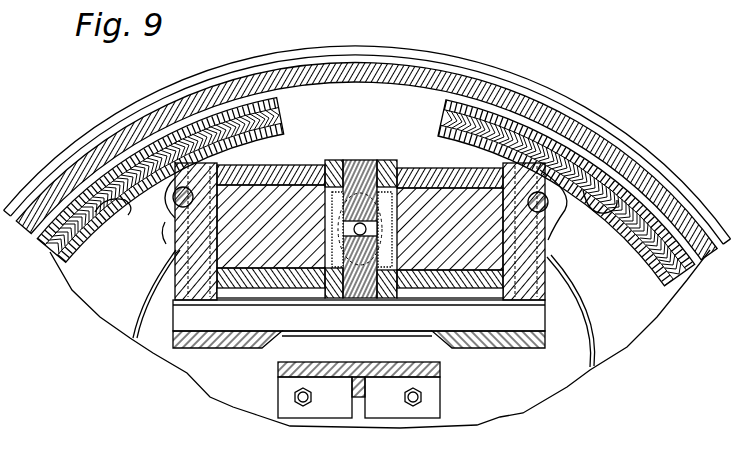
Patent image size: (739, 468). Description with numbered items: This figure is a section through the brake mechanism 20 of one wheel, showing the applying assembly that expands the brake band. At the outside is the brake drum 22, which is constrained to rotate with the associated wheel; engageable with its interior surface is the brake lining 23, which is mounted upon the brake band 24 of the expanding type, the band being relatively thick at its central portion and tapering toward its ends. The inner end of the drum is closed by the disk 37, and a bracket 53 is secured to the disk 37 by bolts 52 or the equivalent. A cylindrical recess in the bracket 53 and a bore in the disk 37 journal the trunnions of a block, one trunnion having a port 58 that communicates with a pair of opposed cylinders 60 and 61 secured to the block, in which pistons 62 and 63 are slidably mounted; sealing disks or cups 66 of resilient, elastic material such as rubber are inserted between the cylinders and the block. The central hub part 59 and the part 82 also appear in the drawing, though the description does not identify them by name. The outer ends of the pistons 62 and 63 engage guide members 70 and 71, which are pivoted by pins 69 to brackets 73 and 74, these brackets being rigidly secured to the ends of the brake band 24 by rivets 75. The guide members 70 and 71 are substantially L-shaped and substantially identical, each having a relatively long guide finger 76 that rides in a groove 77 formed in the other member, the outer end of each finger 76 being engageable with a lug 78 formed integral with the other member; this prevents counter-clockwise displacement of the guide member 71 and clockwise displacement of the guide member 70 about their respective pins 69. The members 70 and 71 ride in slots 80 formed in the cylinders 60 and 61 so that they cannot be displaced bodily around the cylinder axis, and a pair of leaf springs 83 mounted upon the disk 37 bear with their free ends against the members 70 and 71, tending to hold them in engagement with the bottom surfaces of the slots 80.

The brake mechanism 20 is at (606, 119).
The brake drum 22 is at (640, 166).
The brake lining 23 is at (688, 247).
The brake band 24 is at (675, 260).
The disk 37 is at (558, 378).
The bolts 52 is at (312, 405).
The bracket 53 is at (382, 361).
The port 58 is at (360, 235).
The hub spindle 59 is at (373, 160).
The cylinder 60 is at (320, 168).
The cylinder 61 is at (402, 178).
The piston 62 is at (277, 250).
The piston 63 is at (428, 202).
The sealing disks or cups 66 is at (318, 274).
The pins 69 is at (160, 207).
The guide member 70 is at (173, 240).
The guide member 71 is at (547, 250).
The bracket 73 is at (110, 204).
The bracket 74 is at (610, 216).
The rivets 75 is at (255, 140).
The guide finger 76 is at (335, 323).
The groove 77 is at (225, 348).
The lug 78 is at (483, 349).
The slots 80 is at (186, 168).
The flange 82 is at (167, 253).
The leaf springs 83 is at (143, 307).